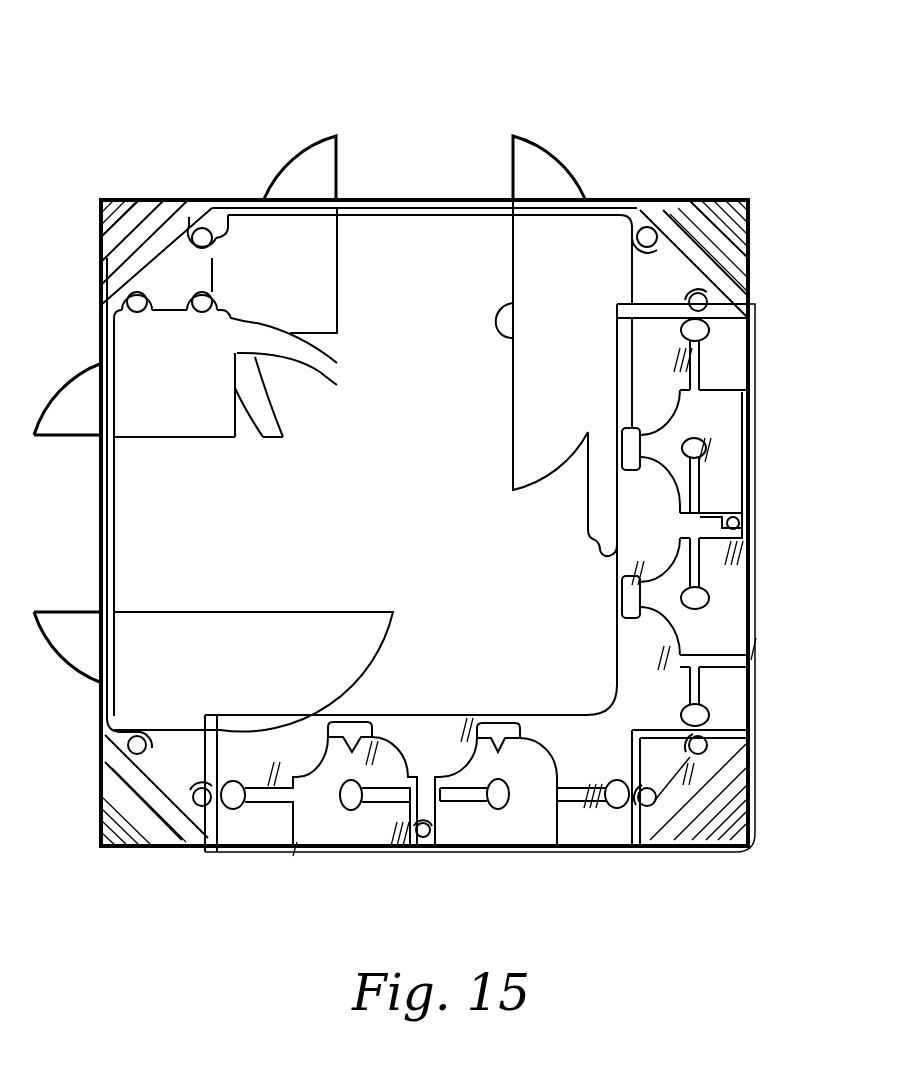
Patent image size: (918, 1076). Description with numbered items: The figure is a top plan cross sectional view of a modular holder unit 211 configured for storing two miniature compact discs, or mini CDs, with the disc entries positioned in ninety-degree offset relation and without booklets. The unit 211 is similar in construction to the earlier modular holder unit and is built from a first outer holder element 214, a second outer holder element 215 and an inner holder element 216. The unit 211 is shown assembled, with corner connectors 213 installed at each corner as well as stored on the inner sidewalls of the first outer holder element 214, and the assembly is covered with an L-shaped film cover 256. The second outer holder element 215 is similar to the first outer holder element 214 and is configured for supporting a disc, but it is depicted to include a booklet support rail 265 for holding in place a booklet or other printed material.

The modular holder unit 211 is at (617, 101).
The inner holder element 216 is at (272, 165).
The second outer holder element 215 is at (516, 303).
The booklet support rail 265 is at (600, 500).
The L-shaped film cover 256 is at (602, 721).
The first outer holder element 214 is at (232, 606).
The corner connectors 213 is at (727, 216).